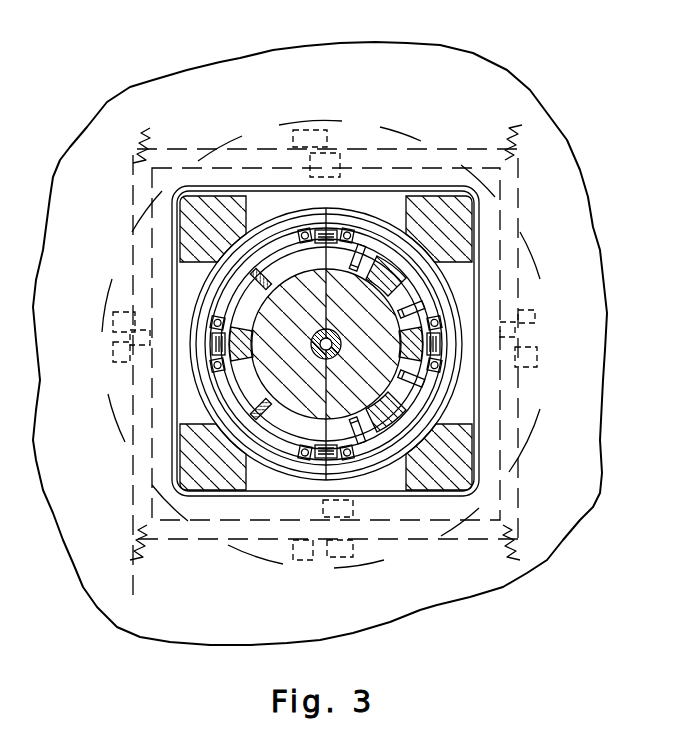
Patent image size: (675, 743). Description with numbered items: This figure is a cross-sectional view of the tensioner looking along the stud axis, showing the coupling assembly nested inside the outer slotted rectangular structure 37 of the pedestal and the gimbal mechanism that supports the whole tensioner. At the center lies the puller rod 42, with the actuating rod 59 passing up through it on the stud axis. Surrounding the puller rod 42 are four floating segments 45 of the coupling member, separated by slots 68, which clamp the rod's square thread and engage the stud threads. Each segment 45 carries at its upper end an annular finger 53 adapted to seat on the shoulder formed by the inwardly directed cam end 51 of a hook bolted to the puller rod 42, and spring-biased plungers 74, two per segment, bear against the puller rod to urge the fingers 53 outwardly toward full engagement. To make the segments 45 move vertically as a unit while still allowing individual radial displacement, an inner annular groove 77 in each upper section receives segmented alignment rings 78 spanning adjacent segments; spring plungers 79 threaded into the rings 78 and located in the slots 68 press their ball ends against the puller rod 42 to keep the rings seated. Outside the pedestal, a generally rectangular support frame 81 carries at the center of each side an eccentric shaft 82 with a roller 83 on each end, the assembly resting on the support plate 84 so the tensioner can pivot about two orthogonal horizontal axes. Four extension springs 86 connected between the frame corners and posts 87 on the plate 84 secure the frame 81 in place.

The outer slotted rectangular structure 37 is at (366, 387).
The puller rod 42 is at (376, 373).
The segments 45 is at (313, 344).
The cam end 51 is at (398, 344).
The annular finger 53 is at (385, 338).
The actuating rod 59 is at (337, 333).
The slots 68 is at (326, 283).
The spring-biased plungers 74 is at (466, 260).
The inner annular groove 77 is at (326, 283).
The segmented alignment rings 78 is at (165, 365).
The spring plungers 79 is at (248, 406).
The support frame 81 is at (281, 344).
The eccentric shaft 82 is at (231, 455).
The roller 83 is at (433, 376).
The support plate 84 is at (320, 351).
The extension springs 86 is at (371, 384).
The posts 87 is at (314, 370).